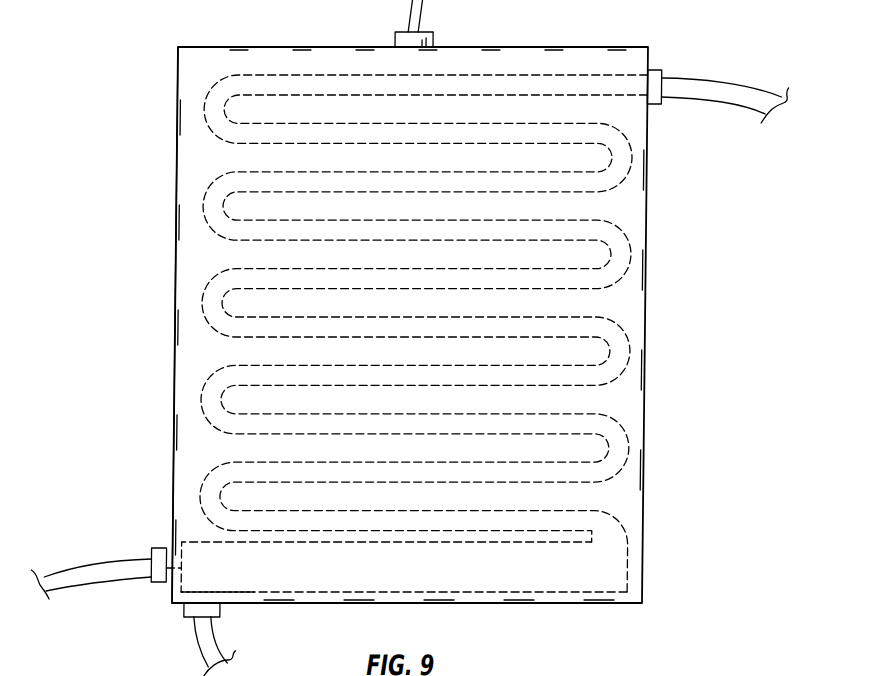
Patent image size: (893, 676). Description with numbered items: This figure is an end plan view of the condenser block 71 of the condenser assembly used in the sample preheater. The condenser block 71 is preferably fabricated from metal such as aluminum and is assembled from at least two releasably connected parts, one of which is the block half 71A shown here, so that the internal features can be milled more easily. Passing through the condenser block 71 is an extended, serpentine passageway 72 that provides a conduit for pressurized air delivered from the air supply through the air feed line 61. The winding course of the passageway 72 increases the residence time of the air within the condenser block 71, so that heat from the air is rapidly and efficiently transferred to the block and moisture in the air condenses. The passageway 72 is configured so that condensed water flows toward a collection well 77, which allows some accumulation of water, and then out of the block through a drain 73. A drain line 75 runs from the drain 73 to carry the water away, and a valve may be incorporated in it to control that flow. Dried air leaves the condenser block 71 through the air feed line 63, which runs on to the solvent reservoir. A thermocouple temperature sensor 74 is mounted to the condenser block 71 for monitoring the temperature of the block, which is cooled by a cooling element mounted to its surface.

The condenser block 71 is at (215, 66).
The block half 71A is at (193, 256).
The serpentine passageway 72 is at (631, 148).
The drain 73 is at (220, 597).
The thermocouple temperature sensor 74 is at (405, 32).
The air feed line 61 is at (693, 78).
The air feed line 63 is at (120, 557).
The drain line 75 is at (202, 640).
The collection well 77 is at (426, 592).